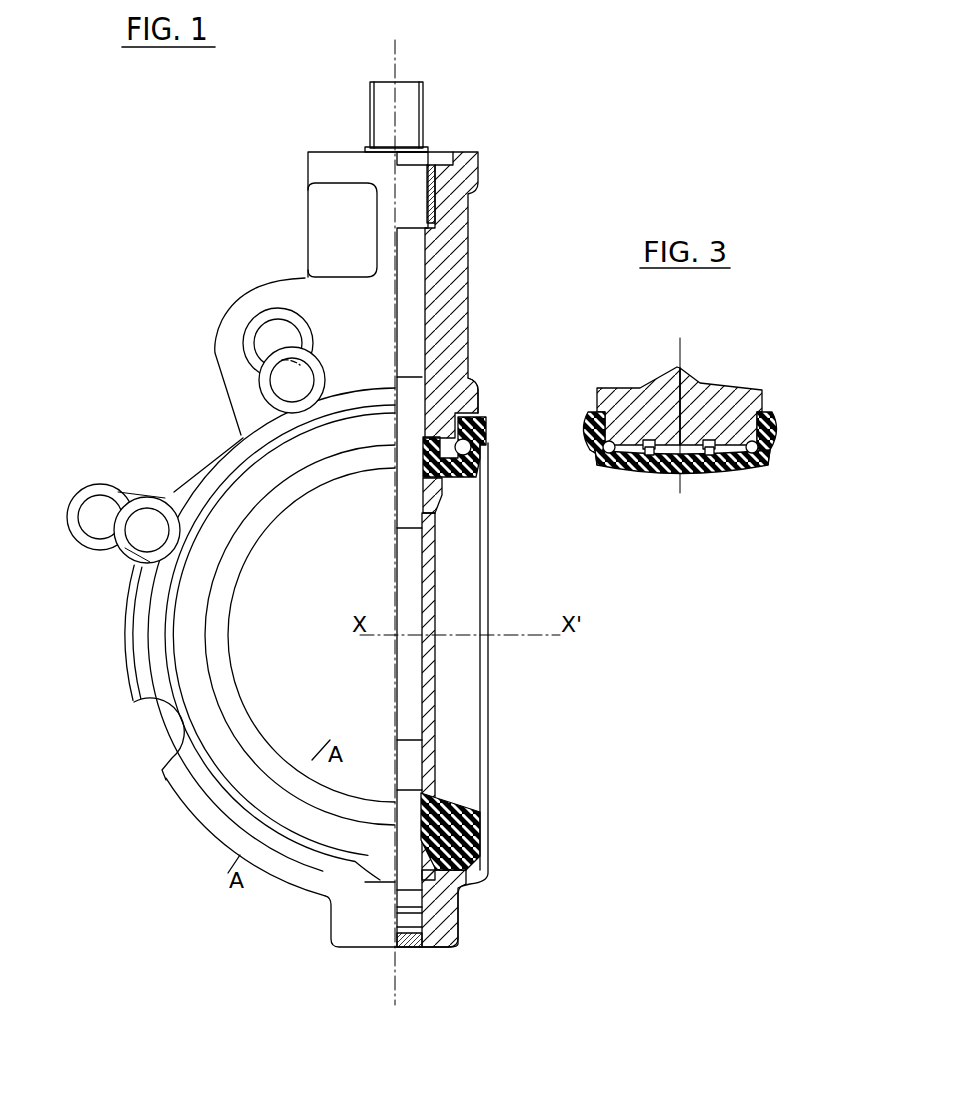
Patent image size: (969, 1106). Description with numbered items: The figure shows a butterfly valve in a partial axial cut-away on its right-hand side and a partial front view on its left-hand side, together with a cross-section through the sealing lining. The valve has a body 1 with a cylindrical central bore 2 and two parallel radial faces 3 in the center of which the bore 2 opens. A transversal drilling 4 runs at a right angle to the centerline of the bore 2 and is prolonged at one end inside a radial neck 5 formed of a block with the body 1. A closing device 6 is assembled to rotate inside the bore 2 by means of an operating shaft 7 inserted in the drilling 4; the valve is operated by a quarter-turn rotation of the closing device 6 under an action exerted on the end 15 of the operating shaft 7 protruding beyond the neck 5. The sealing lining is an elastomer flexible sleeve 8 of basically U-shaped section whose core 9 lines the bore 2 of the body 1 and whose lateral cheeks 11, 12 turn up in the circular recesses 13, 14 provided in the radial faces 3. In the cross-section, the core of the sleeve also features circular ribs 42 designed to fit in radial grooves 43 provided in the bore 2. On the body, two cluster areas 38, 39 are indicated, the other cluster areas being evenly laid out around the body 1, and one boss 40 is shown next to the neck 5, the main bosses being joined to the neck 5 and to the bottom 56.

In FIG. 1, the body 1 is at (176, 796).
In FIG. 3, the body 1 is at (628, 390).
In FIG. 1, the cylindrical central bore 2 is at (458, 440).
In FIG. 3, the cylindrical central bore 2 is at (700, 445).
In FIG. 1, the radial faces 3 is at (479, 398).
In FIG. 1, the transversal drilling 4 is at (434, 327).
In FIG. 1, the radial neck 5 is at (448, 285).
In FIG. 1, the closing device 6 is at (430, 578).
In FIG. 1, the operating shaft 7 is at (410, 258).
In FIG. 1, the sleeve 8 is at (455, 473).
In FIG. 3, the core 9 is at (692, 470).
In FIG. 3, the lateral cheek 11 is at (775, 425).
In FIG. 3, the lateral cheek 12 is at (588, 428).
In FIG. 3, the circular recess 13 is at (613, 456).
In FIG. 3, the circular recess 14 is at (745, 468).
In FIG. 1, the end of the operating shaft 15 is at (412, 103).
In FIG. 1, the cluster area 38 is at (238, 352).
In FIG. 1, the cluster area 39 is at (102, 473).
In FIG. 1, the boss 40 is at (251, 300).
In FIG. 3, the circular ribs 42 is at (650, 458).
In FIG. 3, the radial grooves 43 is at (648, 440).
In FIG. 1, the bottom 56 is at (356, 915).